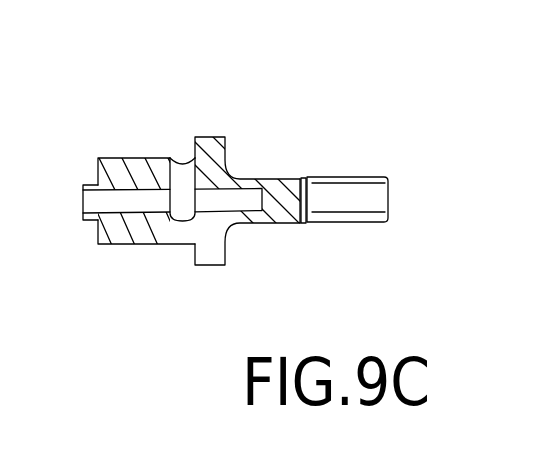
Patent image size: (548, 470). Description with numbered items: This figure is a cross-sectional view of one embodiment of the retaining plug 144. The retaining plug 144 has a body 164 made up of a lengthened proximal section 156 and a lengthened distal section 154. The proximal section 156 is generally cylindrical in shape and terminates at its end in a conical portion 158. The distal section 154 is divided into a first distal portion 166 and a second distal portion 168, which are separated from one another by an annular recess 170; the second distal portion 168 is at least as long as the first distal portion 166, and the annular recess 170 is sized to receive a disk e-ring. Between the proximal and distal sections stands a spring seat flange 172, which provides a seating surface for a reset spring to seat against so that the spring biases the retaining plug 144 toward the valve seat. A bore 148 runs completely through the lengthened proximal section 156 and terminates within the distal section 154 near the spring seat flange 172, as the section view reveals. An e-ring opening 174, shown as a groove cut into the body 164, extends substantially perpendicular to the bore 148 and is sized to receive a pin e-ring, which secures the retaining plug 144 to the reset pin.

The retaining plug 144 is at (212, 80).
The bore 148 is at (135, 213).
The lengthened distal section 154 is at (340, 176).
The lengthened proximal section 156 is at (137, 160).
The conical portion 158 is at (98, 184).
The body 164 is at (252, 243).
The first distal portion 166 is at (263, 179).
The second distal portion 168 is at (383, 176).
The annular recess 170 is at (305, 177).
The spring seat flange 172 is at (210, 137).
The e-ring opening 174 is at (183, 163).